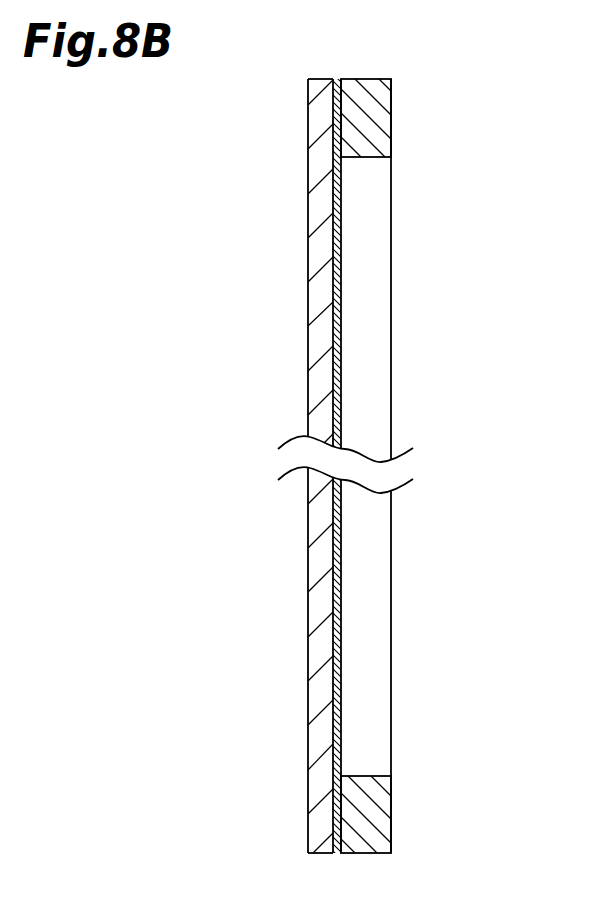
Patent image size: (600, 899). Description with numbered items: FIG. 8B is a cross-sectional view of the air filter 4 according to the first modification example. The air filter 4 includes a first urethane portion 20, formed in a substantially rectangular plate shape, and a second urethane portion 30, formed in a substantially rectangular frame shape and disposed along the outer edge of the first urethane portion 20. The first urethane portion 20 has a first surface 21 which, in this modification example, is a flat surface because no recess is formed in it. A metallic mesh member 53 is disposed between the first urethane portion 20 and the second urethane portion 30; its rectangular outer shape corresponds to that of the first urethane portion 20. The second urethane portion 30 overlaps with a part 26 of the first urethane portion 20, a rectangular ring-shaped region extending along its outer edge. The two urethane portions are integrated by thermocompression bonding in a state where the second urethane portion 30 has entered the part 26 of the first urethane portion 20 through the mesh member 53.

The air filter 4 is at (392, 607).
The first urethane portion 20 is at (318, 378).
The first surface 21 is at (342, 337).
The part of the first urethane portion 26 is at (320, 111).
The second urethane portion 30 is at (380, 112).
The mesh member 53 is at (335, 287).